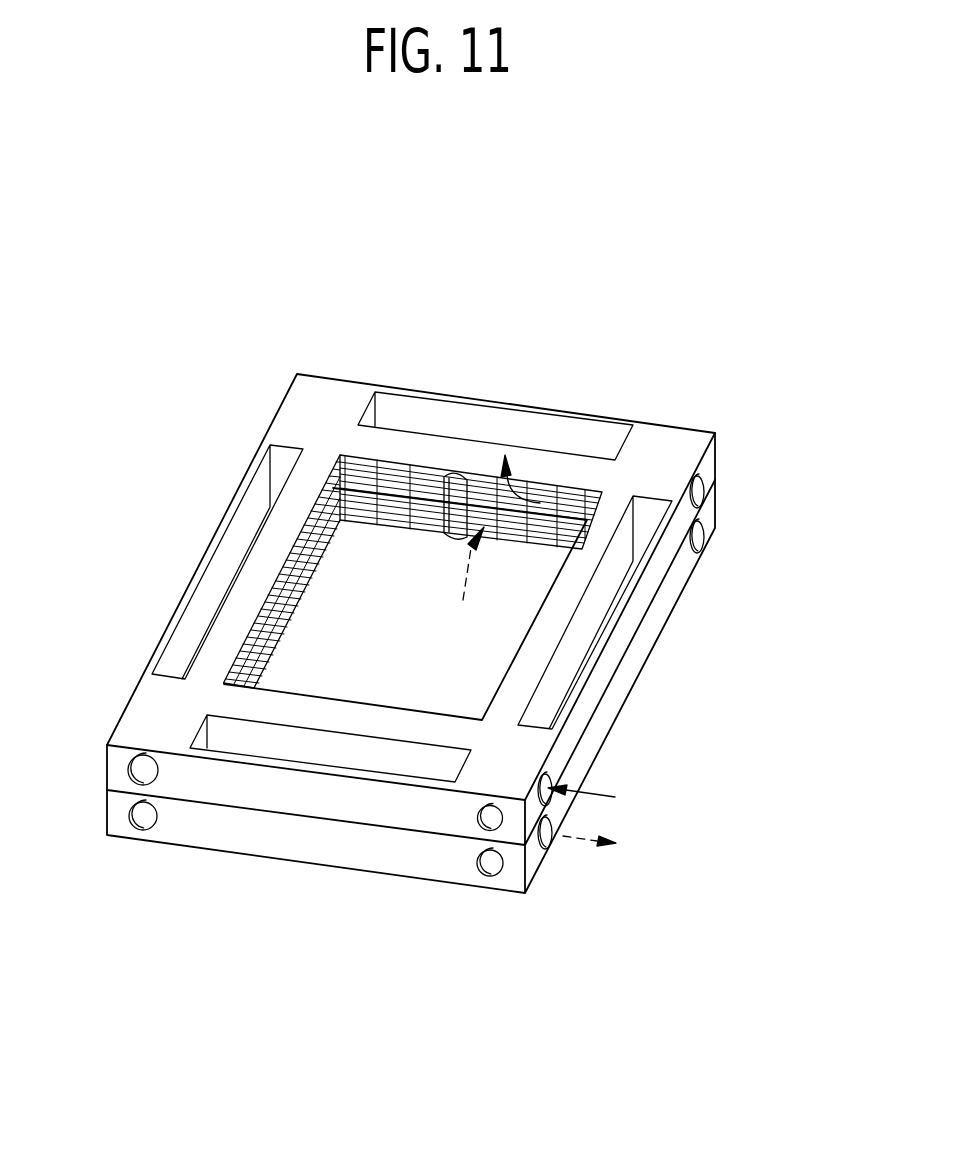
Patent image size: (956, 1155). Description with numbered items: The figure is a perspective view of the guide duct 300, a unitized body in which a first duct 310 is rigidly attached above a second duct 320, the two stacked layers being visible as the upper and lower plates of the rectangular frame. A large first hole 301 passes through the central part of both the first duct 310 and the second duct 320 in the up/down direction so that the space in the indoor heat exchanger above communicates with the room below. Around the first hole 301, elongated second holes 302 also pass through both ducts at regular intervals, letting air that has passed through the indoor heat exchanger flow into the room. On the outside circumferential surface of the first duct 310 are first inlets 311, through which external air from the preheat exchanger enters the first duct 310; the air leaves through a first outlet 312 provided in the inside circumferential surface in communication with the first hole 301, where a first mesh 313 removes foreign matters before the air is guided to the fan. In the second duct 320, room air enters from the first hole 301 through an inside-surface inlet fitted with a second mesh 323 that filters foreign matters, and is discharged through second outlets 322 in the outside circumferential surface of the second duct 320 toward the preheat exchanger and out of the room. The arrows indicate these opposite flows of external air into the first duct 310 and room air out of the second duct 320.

The guide duct 300 is at (700, 263).
The first duct 310 is at (620, 634).
The second duct 320 is at (613, 690).
The first hole 301 is at (313, 673).
The second hole 302 is at (578, 436).
The first inlet 311 is at (702, 482).
The second outlet 322 is at (701, 533).
The first outlet 312 is at (455, 477).
The first mesh 313 is at (385, 478).
The second mesh 323 is at (394, 512).